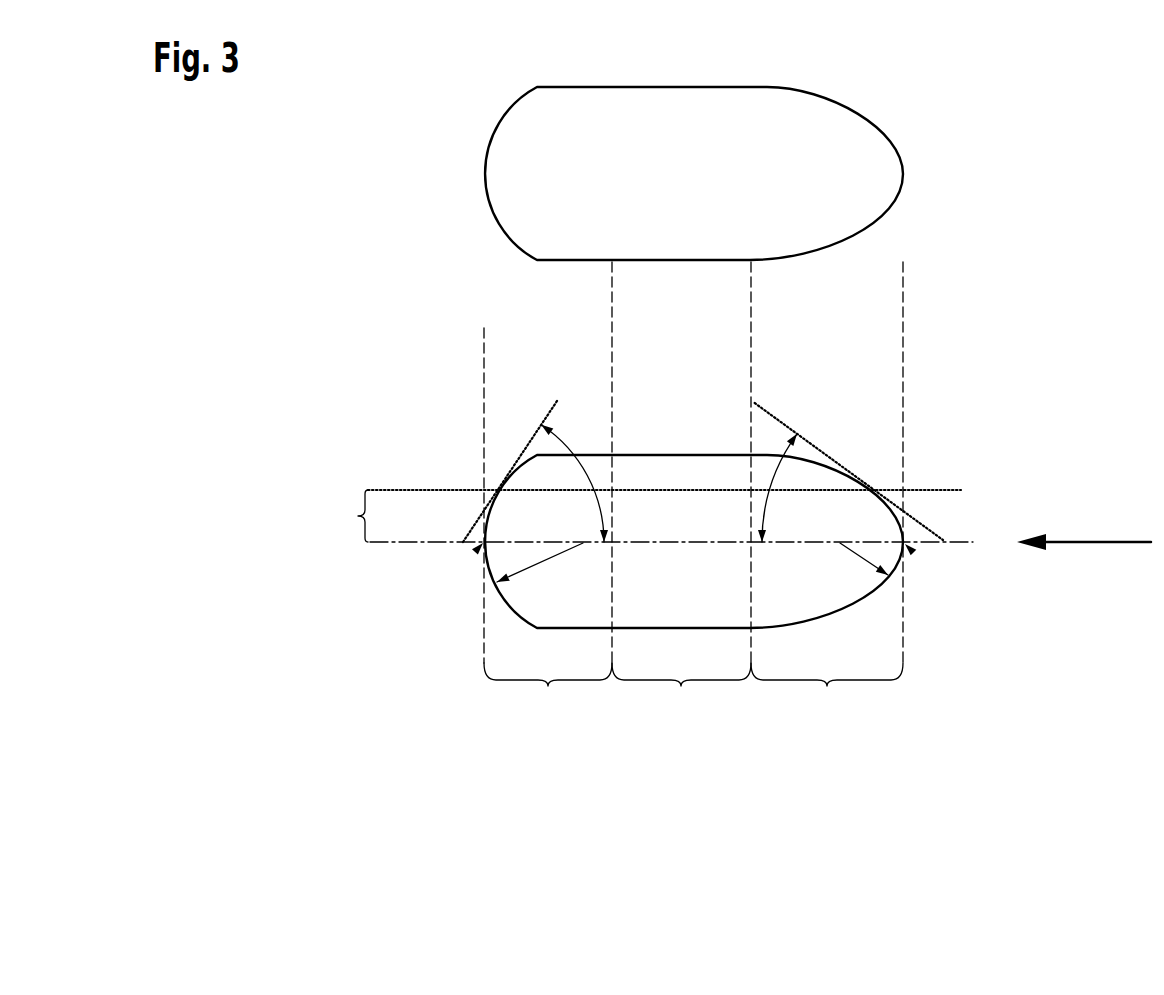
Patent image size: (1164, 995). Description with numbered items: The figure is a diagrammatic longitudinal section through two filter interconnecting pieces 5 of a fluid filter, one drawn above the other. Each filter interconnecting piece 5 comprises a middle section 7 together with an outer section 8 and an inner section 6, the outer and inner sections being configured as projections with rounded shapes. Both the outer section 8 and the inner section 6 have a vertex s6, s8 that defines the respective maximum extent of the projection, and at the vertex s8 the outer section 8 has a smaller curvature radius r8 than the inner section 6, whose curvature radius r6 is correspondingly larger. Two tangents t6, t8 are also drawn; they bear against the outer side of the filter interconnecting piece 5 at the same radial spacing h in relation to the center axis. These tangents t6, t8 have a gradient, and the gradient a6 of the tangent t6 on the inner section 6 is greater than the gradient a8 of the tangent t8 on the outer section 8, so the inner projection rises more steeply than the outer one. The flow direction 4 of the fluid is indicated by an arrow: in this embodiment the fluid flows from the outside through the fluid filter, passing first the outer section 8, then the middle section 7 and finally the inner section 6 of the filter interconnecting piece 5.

The flow direction 4 is at (1099, 540).
The filter interconnecting piece 5 is at (945, 127).
The inner section 6 is at (547, 684).
The middle section 7 is at (681, 684).
The outer section 8 is at (827, 684).
The radial spacing h is at (358, 516).
The tangent on the inner section t6 is at (555, 400).
The tangent on the outer section t8 is at (768, 412).
The gradient of the tangent on the inner section a6 is at (593, 483).
The gradient of the tangent on the outer section a8 is at (770, 487).
The vertex of the inner section s6 is at (483, 543).
The vertex of the outer section s8 is at (905, 544).
The curvature radius of the inner section r6 is at (548, 559).
The curvature radius of the outer section r8 is at (845, 545).